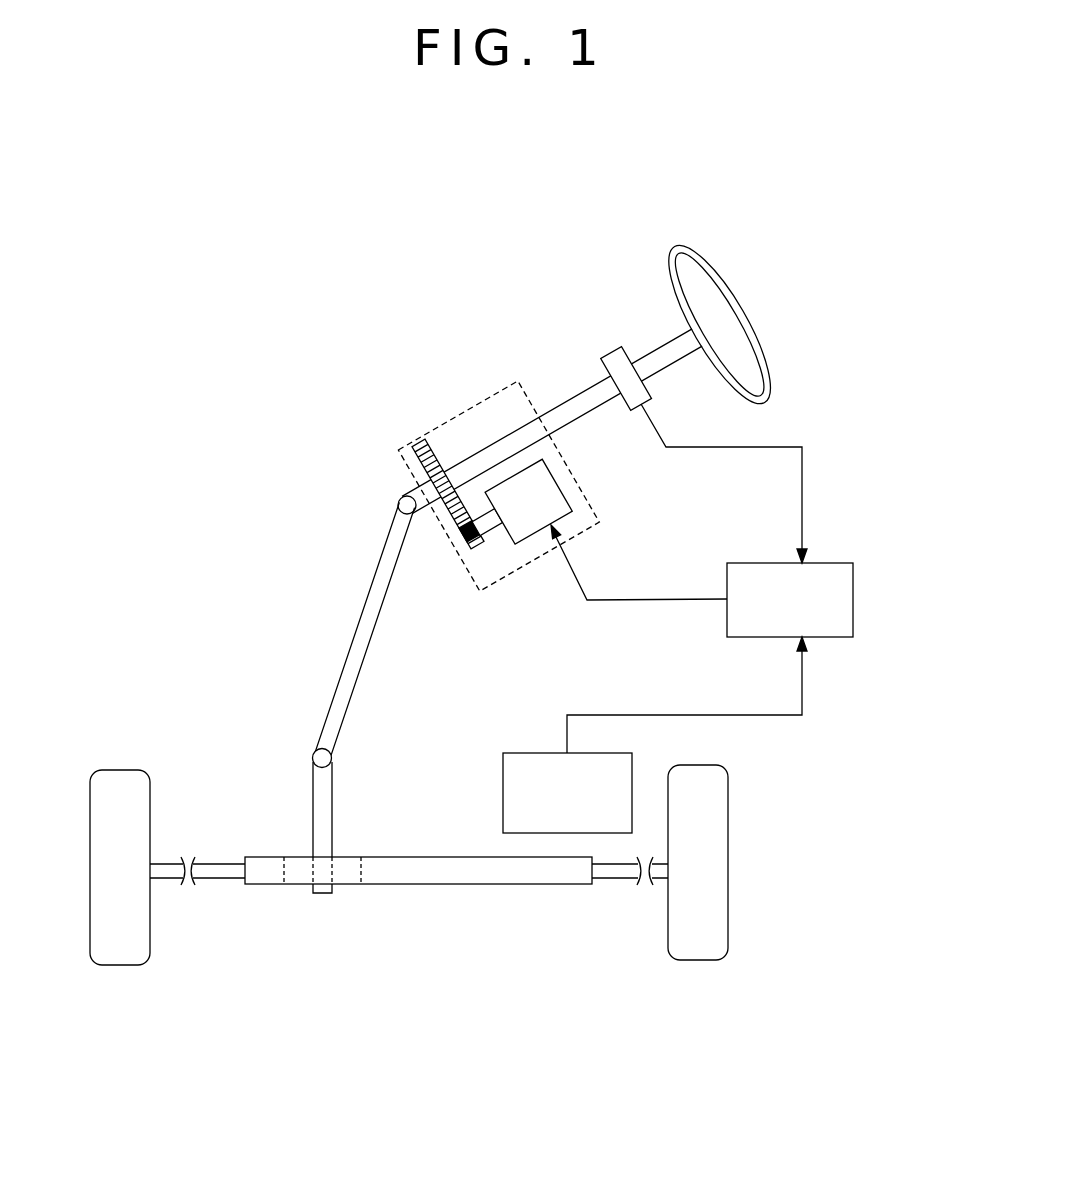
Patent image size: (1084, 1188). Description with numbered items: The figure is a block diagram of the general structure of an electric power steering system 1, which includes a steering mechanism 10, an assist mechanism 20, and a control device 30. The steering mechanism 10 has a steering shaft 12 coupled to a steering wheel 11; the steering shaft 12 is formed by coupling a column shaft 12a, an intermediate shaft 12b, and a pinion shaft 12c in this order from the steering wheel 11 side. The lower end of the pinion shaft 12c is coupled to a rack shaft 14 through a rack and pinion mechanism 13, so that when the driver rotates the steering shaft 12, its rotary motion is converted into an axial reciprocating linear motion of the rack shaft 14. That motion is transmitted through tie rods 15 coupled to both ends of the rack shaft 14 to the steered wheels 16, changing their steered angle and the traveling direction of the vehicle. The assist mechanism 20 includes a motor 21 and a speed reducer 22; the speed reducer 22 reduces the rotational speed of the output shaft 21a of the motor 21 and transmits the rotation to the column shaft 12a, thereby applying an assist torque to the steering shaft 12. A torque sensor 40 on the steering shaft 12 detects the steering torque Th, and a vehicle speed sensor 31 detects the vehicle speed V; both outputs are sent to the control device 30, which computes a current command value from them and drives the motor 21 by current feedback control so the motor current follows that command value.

The electric power steering system 1 is at (288, 370).
The steering mechanism 10 is at (268, 476).
The steering wheel 11 is at (757, 315).
The steering shaft 12 is at (334, 476).
The column shaft 12a is at (398, 500).
The intermediate shaft 12b is at (360, 617).
The pinion shaft 12c is at (312, 775).
The rack and pinion mechanism 13 is at (363, 886).
The rack shaft 14 is at (500, 886).
The tie rods 15 is at (220, 880).
The steered wheels 16 is at (118, 966).
The assist mechanism 20 is at (459, 414).
The motor 21 is at (513, 547).
The output shaft 21a is at (487, 540).
The speed reducer 22 is at (454, 522).
The control device 30 is at (854, 597).
The vehicle speed sensor 31 is at (527, 752).
The torque sensor 40 is at (609, 353).